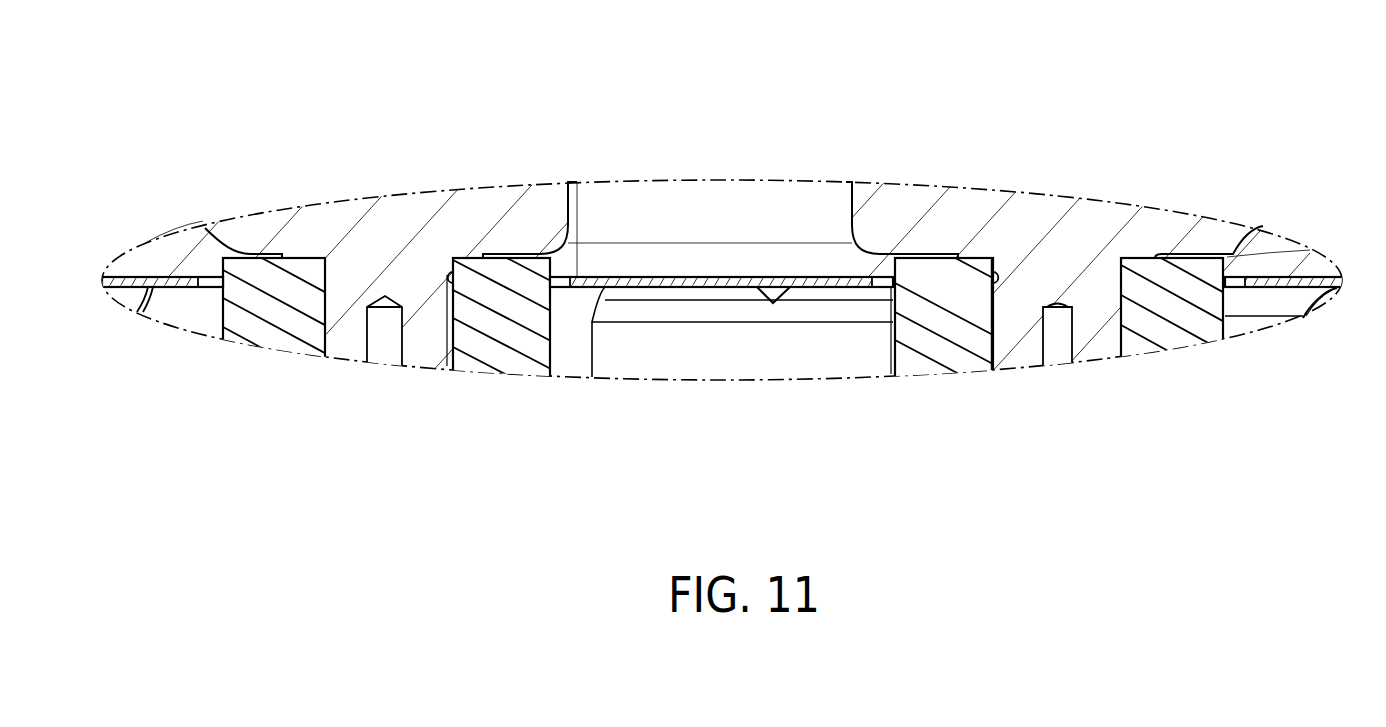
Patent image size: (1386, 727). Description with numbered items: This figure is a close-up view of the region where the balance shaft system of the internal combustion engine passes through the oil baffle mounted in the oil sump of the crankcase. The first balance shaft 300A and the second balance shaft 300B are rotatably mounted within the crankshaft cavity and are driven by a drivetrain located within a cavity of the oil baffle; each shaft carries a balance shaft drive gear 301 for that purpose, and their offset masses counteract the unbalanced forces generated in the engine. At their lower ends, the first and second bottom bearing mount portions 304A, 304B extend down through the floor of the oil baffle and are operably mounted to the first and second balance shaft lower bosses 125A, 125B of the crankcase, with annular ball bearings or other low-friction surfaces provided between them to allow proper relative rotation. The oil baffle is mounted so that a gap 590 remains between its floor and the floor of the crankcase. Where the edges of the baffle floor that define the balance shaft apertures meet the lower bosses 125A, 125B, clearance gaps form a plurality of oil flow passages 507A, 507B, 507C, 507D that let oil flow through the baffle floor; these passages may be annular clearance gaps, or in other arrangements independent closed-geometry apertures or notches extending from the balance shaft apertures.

The balance shaft drive gear 301 is at (153, 282).
The first balance shaft 300A is at (1046, 210).
The second balance shaft 300B is at (392, 218).
The oil flow passage 507A is at (1232, 268).
The oil flow passage 507B is at (879, 268).
The oil flow passage 507C is at (210, 268).
The oil flow passage 507D is at (560, 268).
The first balance shaft lower boss 125A is at (1172, 313).
The second balance shaft lower boss 125B is at (265, 303).
The first bottom bearing mount portion 304A is at (1088, 332).
The second bottom bearing mount portion 304B is at (345, 342).
The gap 590 is at (183, 305).